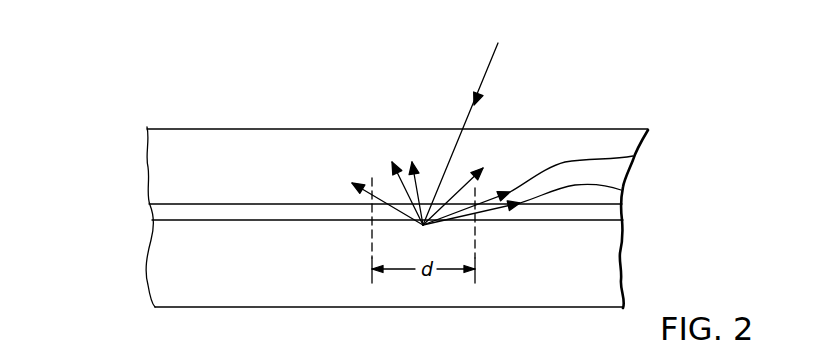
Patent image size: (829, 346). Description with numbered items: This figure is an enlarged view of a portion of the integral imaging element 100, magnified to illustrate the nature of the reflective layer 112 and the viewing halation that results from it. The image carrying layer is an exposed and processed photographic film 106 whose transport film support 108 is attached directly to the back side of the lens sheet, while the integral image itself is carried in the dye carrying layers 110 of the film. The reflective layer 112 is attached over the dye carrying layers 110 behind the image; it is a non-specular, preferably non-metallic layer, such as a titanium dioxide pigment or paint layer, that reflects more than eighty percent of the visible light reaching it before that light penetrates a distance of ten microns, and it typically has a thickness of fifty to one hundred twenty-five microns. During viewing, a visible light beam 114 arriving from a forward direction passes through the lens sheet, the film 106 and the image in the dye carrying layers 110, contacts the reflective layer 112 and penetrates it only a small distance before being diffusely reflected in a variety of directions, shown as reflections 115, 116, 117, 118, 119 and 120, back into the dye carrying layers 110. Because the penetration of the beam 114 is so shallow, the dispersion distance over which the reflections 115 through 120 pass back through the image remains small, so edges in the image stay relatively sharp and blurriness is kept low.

The integral imaging element 100 is at (634, 112).
The photographic film 106 is at (137, 143).
The transport film support 108 is at (165, 172).
The dye carrying layers 110 is at (141, 205).
The reflective layer 112 is at (612, 268).
The visible light beam 114 is at (492, 60).
The reflection 115 is at (352, 183).
The reflection 116 is at (392, 162).
The reflection 117 is at (412, 162).
The reflection 118 is at (485, 166).
The reflection 119 is at (633, 158).
The reflection 120 is at (620, 190).